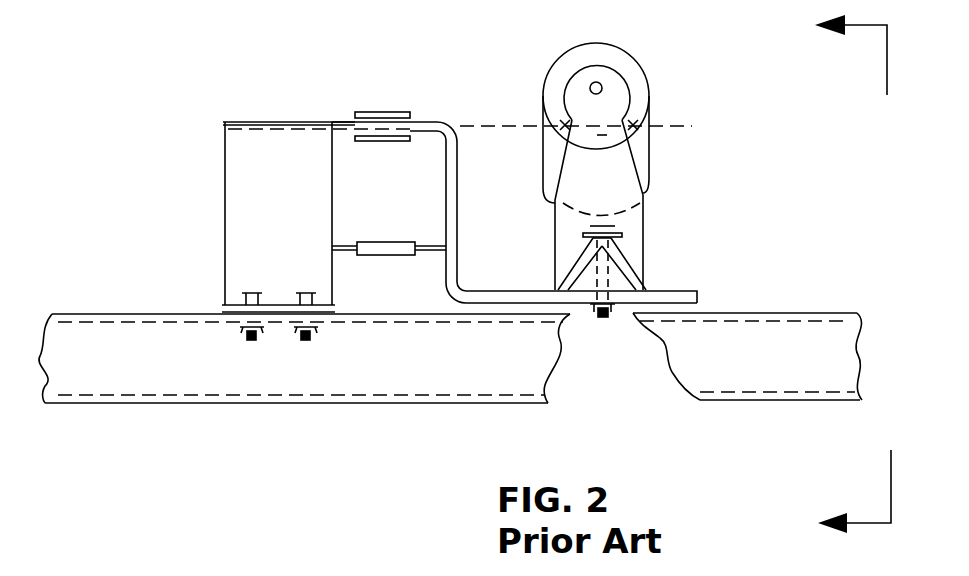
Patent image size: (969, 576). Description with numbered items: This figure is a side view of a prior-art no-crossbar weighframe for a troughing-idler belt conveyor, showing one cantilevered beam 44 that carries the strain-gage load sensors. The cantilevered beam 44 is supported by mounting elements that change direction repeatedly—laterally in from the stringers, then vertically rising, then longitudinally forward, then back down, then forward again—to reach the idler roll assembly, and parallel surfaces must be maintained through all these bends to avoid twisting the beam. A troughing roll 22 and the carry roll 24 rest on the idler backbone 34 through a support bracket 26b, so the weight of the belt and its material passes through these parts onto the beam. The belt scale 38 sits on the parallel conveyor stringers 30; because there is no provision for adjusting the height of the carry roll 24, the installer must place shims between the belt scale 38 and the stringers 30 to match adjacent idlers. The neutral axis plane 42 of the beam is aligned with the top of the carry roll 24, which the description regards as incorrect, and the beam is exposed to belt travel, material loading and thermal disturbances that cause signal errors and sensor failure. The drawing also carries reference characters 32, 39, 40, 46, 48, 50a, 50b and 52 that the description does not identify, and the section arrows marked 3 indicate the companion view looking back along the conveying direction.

The troughing roll 22 is at (571, 68).
The carry roll 24 is at (653, 172).
The support bracket 26b is at (563, 228).
The conveyor stringer 30 is at (492, 370).
The roller assembly 32 is at (379, 45).
The idler backbone 34 is at (622, 268).
The belt scale 38 is at (232, 311).
The bolts 39 is at (248, 334).
The bracket 40 is at (226, 196).
The neutral axis plane 42 is at (338, 122).
The cantilevered beam 44 is at (457, 186).
The base strip portion 46 is at (508, 291).
The bolt 48 is at (604, 322).
The upper pad 50a is at (385, 112).
The lower pad 50b is at (383, 143).
The spring 52 is at (378, 251).
The section line 3- 3 is at (843, 284).